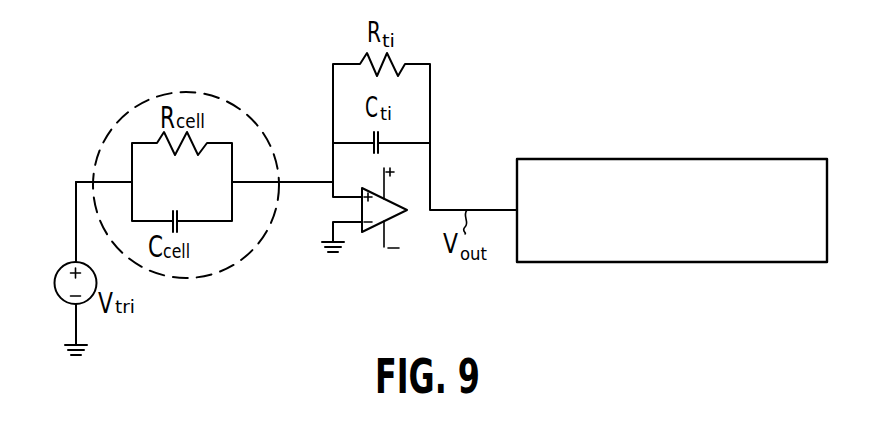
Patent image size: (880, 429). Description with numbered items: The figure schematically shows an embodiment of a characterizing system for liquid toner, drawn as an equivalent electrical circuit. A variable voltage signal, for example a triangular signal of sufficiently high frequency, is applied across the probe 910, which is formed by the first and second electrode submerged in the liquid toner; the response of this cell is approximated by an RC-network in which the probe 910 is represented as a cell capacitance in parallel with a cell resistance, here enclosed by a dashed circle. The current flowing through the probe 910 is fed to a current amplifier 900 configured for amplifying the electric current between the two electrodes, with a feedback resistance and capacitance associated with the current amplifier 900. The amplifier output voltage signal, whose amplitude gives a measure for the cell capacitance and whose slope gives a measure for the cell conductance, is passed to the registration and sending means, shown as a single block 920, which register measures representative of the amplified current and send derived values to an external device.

The current amplifier 900 is at (365, 229).
The probe 910 is at (197, 92).
The registration and sending means 920 is at (670, 159).